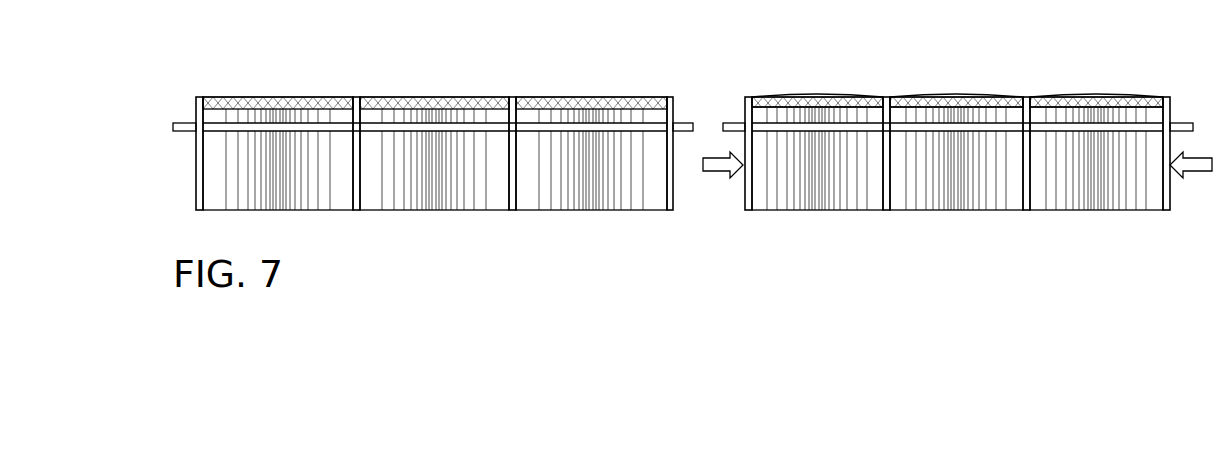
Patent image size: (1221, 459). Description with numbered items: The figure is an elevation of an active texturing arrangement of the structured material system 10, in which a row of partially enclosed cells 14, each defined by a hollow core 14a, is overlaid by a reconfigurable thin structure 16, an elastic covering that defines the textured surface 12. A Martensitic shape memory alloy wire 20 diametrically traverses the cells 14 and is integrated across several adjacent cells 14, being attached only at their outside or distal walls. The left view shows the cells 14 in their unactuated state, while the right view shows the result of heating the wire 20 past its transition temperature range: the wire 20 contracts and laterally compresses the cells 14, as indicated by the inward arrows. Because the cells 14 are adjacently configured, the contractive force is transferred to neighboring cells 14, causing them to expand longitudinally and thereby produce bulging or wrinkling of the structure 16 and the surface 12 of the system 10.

The structured material system 10 is at (420, 113).
The surface 12 is at (356, 94).
The reconfigurable thin structure 16 is at (473, 104).
The core 14a is at (620, 163).
The SMA wire actuator 20 is at (687, 120).
The cell 14 is at (806, 236).